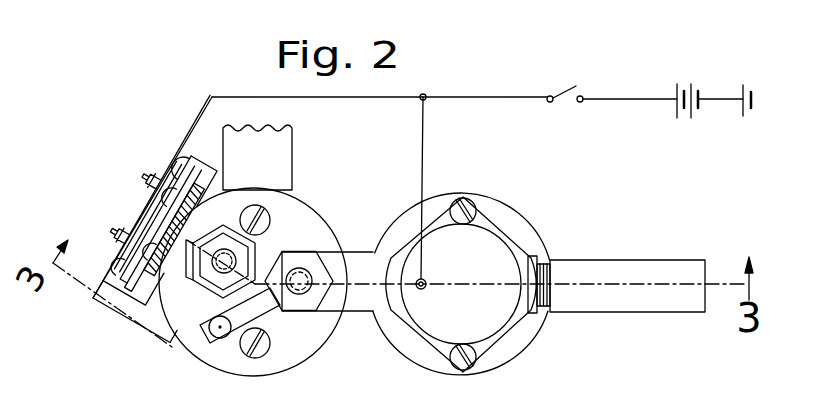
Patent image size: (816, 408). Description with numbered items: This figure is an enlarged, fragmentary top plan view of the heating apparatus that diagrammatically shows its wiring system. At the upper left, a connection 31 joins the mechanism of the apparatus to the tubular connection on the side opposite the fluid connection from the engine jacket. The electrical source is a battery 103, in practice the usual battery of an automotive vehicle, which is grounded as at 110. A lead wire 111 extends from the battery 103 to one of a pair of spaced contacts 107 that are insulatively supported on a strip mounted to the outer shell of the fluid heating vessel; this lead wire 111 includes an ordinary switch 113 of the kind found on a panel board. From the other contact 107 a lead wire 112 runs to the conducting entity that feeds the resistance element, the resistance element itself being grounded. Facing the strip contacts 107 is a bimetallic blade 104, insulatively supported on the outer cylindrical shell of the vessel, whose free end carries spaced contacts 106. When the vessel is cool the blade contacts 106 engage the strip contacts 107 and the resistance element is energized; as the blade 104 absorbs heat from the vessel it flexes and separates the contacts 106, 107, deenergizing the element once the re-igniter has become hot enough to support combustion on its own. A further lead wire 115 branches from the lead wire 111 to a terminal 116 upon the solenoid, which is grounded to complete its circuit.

The connection 31 is at (292, 153).
The battery 103 is at (667, 125).
The bimetallic blade 104 is at (187, 226).
The contacts 106 is at (197, 166).
The contacts 107 is at (160, 209).
The ground 110 is at (752, 110).
The lead wire 111 is at (188, 135).
The lead wire 112 is at (152, 336).
The switch 113 is at (574, 84).
The lead wire 115 is at (423, 163).
The terminal 116 is at (426, 281).